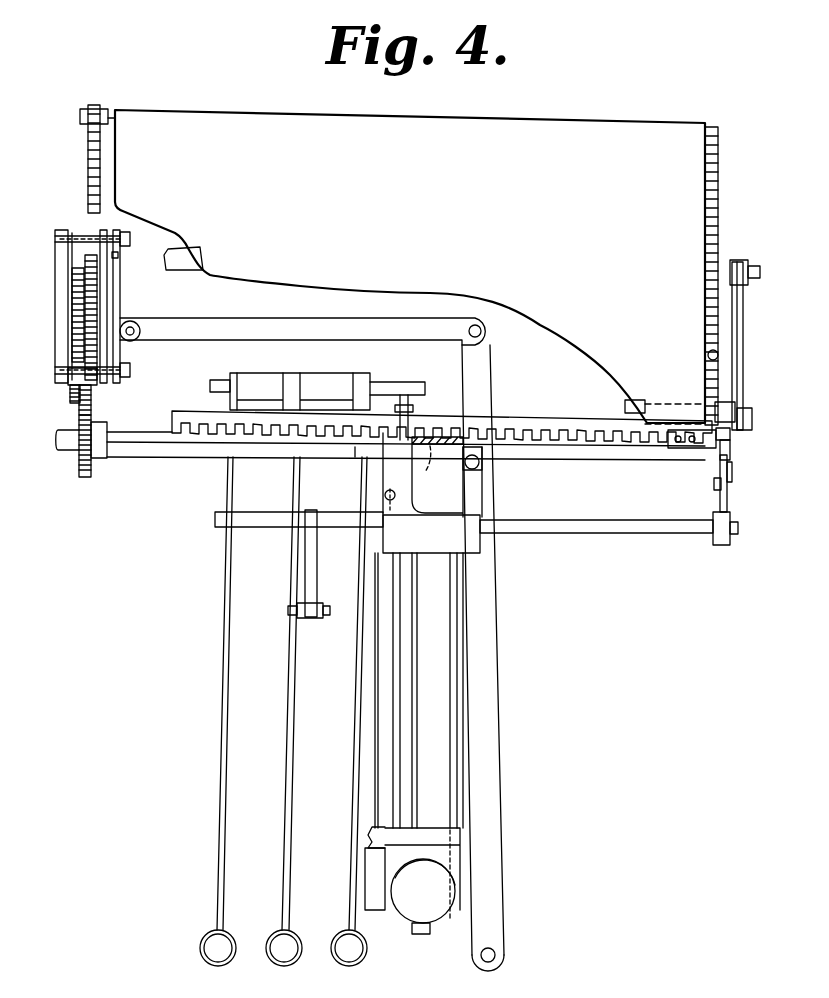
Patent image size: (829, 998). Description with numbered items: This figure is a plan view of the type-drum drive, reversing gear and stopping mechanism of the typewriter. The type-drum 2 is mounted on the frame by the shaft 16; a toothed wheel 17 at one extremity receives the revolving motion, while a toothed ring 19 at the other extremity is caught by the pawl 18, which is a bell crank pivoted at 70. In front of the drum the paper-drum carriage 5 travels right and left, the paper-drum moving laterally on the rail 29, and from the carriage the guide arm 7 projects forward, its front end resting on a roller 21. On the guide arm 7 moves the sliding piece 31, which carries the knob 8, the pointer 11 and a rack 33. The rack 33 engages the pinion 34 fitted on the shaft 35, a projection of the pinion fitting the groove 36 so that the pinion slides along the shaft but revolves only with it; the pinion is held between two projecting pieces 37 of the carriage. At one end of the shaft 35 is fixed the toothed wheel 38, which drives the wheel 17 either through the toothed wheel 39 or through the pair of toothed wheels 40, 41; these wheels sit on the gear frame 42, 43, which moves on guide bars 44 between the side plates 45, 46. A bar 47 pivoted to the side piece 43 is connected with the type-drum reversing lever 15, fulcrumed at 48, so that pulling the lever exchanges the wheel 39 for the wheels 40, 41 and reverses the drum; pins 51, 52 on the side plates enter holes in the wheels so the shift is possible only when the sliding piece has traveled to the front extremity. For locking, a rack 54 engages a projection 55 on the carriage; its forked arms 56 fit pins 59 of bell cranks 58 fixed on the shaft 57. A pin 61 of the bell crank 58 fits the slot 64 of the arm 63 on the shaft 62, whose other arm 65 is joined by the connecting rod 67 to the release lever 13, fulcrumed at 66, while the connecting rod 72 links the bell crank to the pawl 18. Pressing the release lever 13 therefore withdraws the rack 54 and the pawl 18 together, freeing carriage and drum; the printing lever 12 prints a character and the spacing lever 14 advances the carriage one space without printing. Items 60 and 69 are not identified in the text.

The type-drum 2 is at (410, 266).
The paper-drum carriage 5 is at (432, 481).
The guide arm 7 is at (419, 690).
The knob 8 is at (423, 891).
The pointer 11 is at (368, 836).
The printing lever 12 is at (215, 875).
The release lever 13 is at (281, 875).
The spacing lever 14 is at (348, 883).
The type-drum reversing lever 15 is at (485, 835).
The shaft 16 is at (205, 262).
The toothed wheel 17 is at (88, 160).
The pawl 18 is at (708, 350).
The toothed ring 19 is at (705, 246).
The roller 21 is at (410, 928).
The rail 29 is at (431, 534).
The sliding piece 31 is at (418, 850).
The rack 33 is at (395, 725).
The pinion 34 is at (410, 470).
The shaft 35 is at (265, 465).
The groove 36 is at (342, 462).
The projecting pieces 37 is at (385, 500).
The toothed wheel 38 is at (91, 470).
The toothed wheel 39 is at (91, 395).
The toothed wheel 40 is at (70, 403).
The toothed wheel 41 is at (72, 283).
The gear frame 42 is at (68, 311).
The side piece of gear frame 43 is at (120, 310).
The guide bars 44 is at (100, 236).
The side plate 45 is at (58, 262).
The side plate 46 is at (107, 288).
The bar 47 is at (302, 331).
The fulcrum 48 is at (470, 470).
The pin 51 is at (68, 365).
The pin 52 is at (100, 265).
The rack 54 is at (442, 427).
The projection 55 is at (442, 462).
The forked arm 56 is at (712, 448).
The shaft 57 is at (624, 406).
The bell crank 58 is at (730, 438).
The pin 59 is at (730, 455).
The plate 60 is at (731, 480).
The pin 61 is at (714, 486).
The shaft 62 is at (610, 540).
The arm 63 is at (713, 535).
The slot 64 is at (720, 500).
The arm 65 is at (317, 565).
The fulcrum 66 is at (428, 388).
The connecting rod 67 is at (310, 618).
The plate 69 is at (732, 307).
The pivot 70 is at (760, 265).
The connecting rod 72 is at (714, 388).